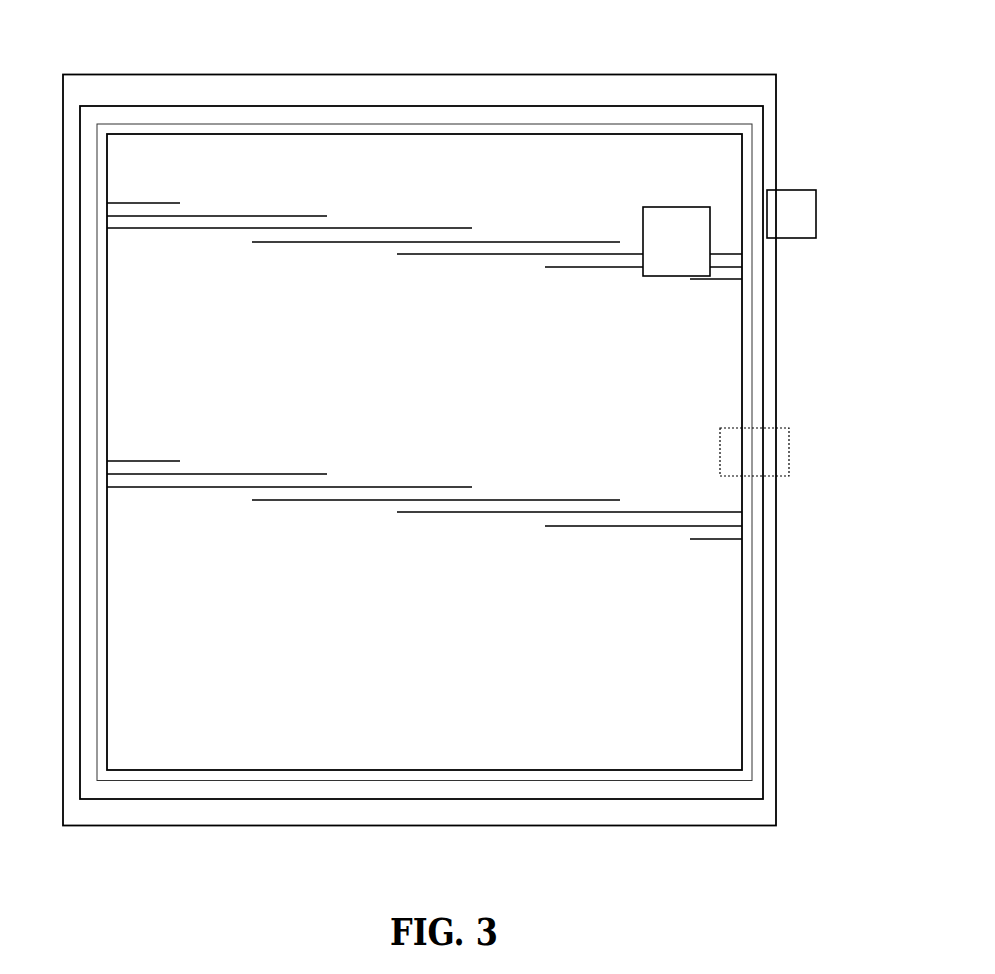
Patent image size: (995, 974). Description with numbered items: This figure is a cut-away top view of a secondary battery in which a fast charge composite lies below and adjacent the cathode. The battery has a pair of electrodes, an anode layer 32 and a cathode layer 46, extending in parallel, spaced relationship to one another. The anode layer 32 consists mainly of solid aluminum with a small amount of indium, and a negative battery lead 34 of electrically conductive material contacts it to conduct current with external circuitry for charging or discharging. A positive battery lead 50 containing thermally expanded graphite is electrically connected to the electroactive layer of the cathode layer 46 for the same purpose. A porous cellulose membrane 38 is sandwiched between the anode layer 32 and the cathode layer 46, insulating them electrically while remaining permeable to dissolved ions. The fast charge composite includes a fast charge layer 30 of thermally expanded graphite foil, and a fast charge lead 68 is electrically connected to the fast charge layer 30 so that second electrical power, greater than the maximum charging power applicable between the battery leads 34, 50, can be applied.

The fast charge layer 30 is at (750, 598).
The anode layer 32 is at (423, 155).
The negative battery lead 34 is at (672, 212).
The membrane 38 is at (522, 115).
The cathode layer 46 is at (768, 387).
The positive battery lead 50 is at (805, 196).
The fast charge lead 68 is at (789, 457).